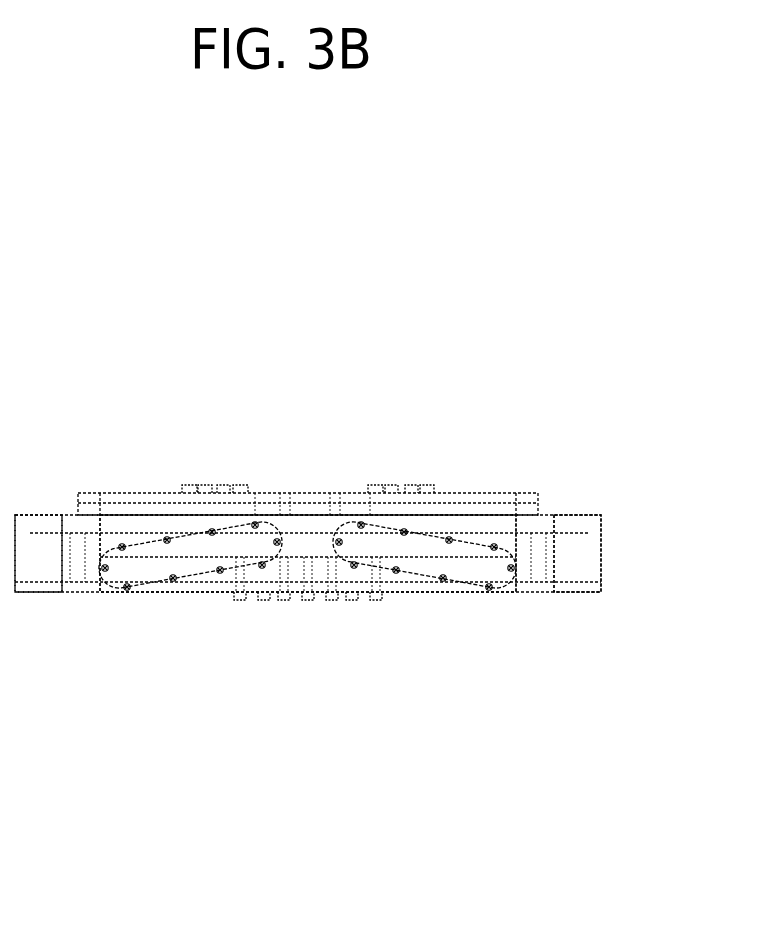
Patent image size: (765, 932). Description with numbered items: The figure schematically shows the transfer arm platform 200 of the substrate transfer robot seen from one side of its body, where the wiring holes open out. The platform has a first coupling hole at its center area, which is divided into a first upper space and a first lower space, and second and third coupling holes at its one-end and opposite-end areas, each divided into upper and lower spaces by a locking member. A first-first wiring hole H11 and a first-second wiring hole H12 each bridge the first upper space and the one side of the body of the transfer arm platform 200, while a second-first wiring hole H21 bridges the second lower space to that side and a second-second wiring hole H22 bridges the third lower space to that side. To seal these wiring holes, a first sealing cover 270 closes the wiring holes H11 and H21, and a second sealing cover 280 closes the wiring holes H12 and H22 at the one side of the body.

The transfer arm platform 200 is at (52, 292).
The first sealing cover 270 is at (462, 565).
The second sealing cover 280 is at (180, 565).
The (1_1)-st wiring hole H11 is at (358, 547).
The (1_2)-nd wiring hole H12 is at (260, 545).
The (2_1)-st wiring hole H21 is at (495, 563).
The (2_2)-nd wiring hole H22 is at (127, 567).